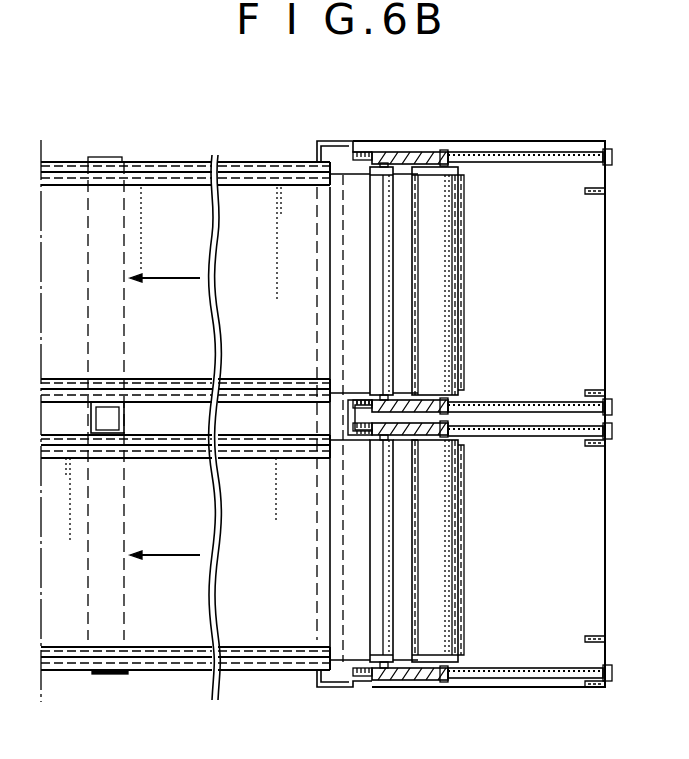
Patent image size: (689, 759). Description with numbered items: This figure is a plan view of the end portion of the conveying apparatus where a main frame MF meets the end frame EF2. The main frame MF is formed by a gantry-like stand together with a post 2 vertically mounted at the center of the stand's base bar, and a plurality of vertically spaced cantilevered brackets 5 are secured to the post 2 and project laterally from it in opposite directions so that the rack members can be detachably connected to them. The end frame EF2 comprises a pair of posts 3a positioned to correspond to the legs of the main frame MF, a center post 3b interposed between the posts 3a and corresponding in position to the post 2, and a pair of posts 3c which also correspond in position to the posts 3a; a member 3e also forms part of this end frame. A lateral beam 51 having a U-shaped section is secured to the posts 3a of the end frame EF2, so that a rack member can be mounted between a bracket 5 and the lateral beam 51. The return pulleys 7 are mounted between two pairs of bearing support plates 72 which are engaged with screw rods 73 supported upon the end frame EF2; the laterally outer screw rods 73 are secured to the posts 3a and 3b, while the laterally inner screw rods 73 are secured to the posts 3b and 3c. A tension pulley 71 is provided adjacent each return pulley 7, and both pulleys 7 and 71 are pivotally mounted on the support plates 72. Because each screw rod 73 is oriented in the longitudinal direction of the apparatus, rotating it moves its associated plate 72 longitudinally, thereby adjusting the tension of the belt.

The main frame MF is at (85, 222).
The end frame EF2 is at (482, 130).
The post 2 is at (126, 418).
The bracket 5 is at (124, 635).
The lateral beam 51 is at (318, 617).
The post 3a is at (332, 140).
The center post 3b is at (348, 417).
The post 3c is at (598, 140).
The frame member 3e is at (541, 152).
The return pulley 7 is at (458, 598).
The tension pulley 71 is at (380, 632).
The bearing support plate 72 is at (403, 150).
The screw rod 73 is at (535, 438).